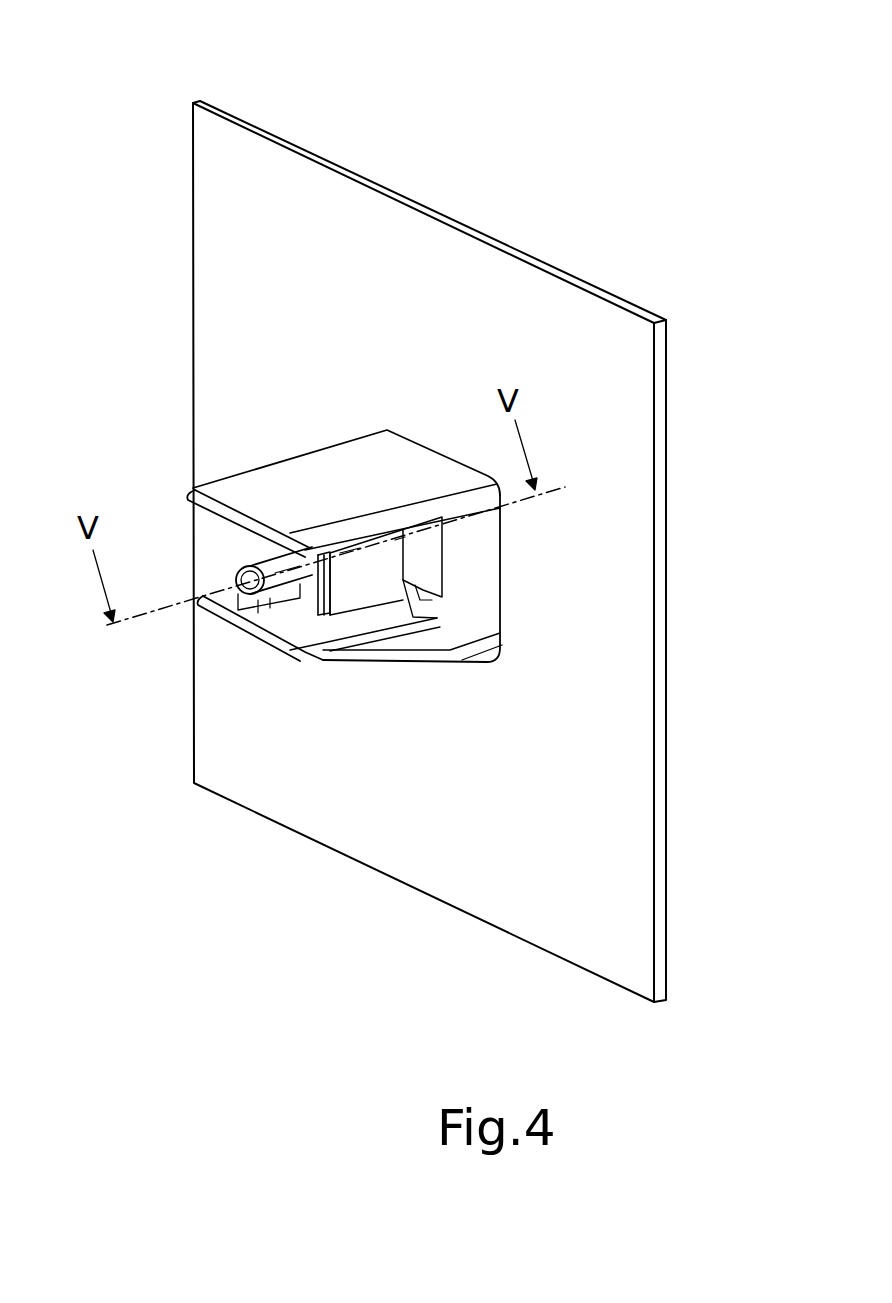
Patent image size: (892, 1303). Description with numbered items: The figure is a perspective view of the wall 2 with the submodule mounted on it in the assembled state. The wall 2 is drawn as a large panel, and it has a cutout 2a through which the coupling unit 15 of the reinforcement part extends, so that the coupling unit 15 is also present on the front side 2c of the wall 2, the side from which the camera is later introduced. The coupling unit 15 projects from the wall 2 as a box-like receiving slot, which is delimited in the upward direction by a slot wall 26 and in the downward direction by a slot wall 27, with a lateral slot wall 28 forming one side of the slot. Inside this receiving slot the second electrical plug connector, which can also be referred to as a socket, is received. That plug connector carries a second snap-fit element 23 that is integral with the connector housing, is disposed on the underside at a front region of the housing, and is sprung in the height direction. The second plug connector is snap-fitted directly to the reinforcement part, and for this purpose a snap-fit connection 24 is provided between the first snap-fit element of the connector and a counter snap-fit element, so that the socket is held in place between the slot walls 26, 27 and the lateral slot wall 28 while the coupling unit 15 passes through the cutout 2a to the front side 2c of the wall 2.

The wall 2 is at (308, 200).
The cutout 2a is at (441, 468).
The front side 2c is at (440, 860).
The coupling unit 15 is at (321, 570).
The second snap-fit element 23 is at (282, 620).
The snap-fit connection 24 is at (318, 620).
The slot wall 26 is at (322, 488).
The slot wall 27 is at (363, 660).
The lateral slot wall 28 is at (377, 592).